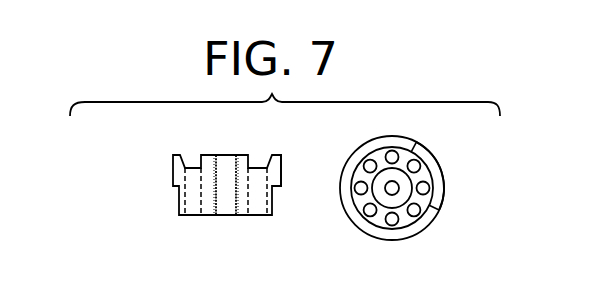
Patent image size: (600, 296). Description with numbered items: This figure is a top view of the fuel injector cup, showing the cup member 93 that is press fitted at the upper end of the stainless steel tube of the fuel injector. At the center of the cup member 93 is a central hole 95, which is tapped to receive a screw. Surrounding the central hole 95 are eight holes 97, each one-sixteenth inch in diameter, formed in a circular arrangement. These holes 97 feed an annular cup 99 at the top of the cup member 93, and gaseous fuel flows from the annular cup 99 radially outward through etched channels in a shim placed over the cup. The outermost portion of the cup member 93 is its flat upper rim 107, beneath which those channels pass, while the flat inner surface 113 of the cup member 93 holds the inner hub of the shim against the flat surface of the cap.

The cup member 93 is at (178, 203).
The central hole 95 is at (217, 201).
The holes 97 is at (256, 203).
The annular cup 99 is at (183, 167).
The flat upper rim 107 is at (278, 153).
The flat inner surface 113 is at (244, 155).